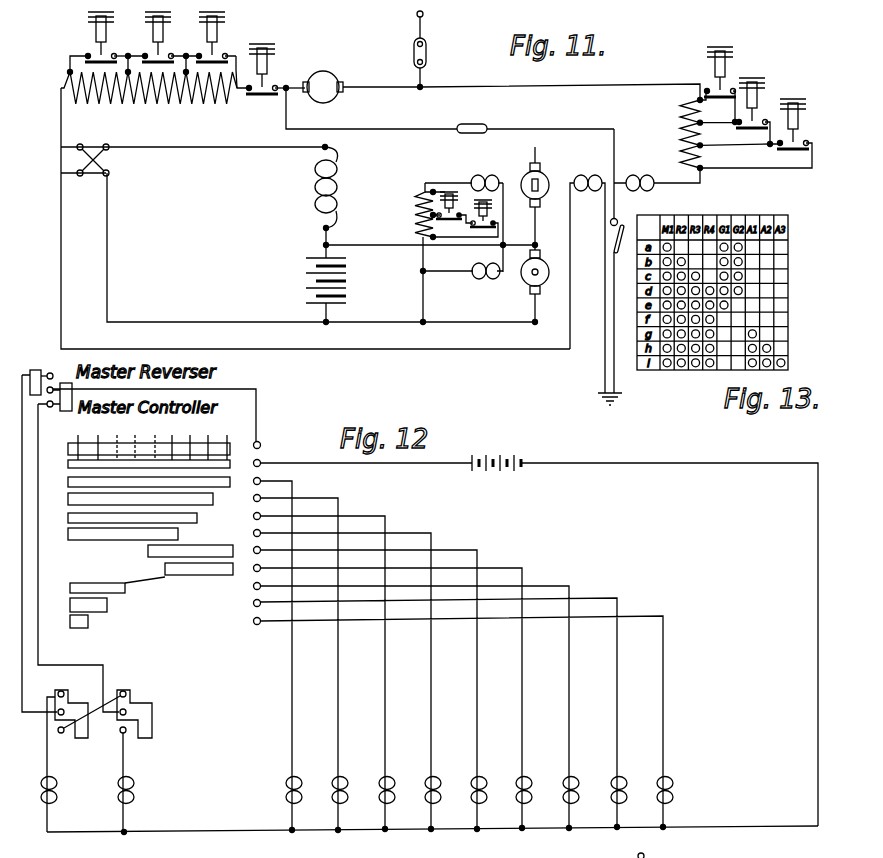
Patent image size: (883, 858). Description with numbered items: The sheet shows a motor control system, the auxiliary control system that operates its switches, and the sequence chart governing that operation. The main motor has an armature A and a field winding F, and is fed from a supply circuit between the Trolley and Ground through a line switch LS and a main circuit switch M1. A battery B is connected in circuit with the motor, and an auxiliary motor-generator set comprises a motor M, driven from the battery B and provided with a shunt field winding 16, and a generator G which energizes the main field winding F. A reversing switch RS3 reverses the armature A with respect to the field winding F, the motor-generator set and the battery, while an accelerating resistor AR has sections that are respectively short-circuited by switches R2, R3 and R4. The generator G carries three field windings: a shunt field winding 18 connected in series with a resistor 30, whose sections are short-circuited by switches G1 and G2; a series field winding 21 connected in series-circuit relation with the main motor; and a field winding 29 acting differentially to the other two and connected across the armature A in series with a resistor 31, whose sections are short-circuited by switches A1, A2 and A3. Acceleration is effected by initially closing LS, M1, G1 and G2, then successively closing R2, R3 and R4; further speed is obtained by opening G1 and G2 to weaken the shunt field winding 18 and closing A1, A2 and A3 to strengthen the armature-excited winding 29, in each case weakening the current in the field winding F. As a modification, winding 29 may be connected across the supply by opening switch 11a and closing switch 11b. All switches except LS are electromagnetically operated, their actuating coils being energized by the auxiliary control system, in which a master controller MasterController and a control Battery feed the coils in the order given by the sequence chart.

In FIG. 11, the resistor-short-circuiting switch R4 is at (106, 37).
In FIG. 12, the resistor-short-circuiting switch R4 is at (421, 803).
In FIG. 11, the resistor-short-circuiting switch R3 is at (157, 37).
In FIG. 12, the resistor-short-circuiting switch R3 is at (381, 798).
In FIG. 11, the resistor-short-circuiting switch R2 is at (213, 37).
In FIG. 12, the resistor-short-circuiting switch R2 is at (329, 804).
In FIG. 11, the main circuit switch M1 is at (275, 69).
In FIG. 12, the main circuit switch M1 is at (288, 798).
In FIG. 11, the armature A is at (323, 87).
In FIG. 11, the accelerating resistor AR is at (155, 94).
In FIG. 11, the trolley Trolley is at (448, 24).
In FIG. 12, the trolley Trolley is at (668, 851).
In FIG. 11, the line switch LS is at (432, 64).
In FIG. 11, the switch 11a is at (470, 123).
In FIG. 11, the switch 11b is at (623, 223).
In FIG. 11, the reversing switch RS3 is at (109, 160).
In FIG. 12, the reversing switch RS3 is at (126, 704).
In FIG. 11, the field winding F is at (335, 188).
In FIG. 11, the battery B is at (340, 280).
In FIG. 11, the resistor 30 is at (414, 216).
In FIG. 11, the switch G1 is at (454, 207).
In FIG. 12, the switch G1 is at (473, 798).
In FIG. 11, the switch G2 is at (489, 213).
In FIG. 12, the switch G2 is at (512, 803).
In FIG. 11, the shunt field winding 18 is at (474, 176).
In FIG. 11, the shunt field winding 16 is at (463, 283).
In FIG. 11, the generator G is at (540, 198).
In FIG. 11, the motor M is at (532, 287).
In FIG. 11, the series field winding 21 is at (590, 172).
In FIG. 11, the field winding 29 is at (645, 163).
In FIG. 11, the resistor 31 is at (680, 143).
In FIG. 11, the switch A1 is at (724, 68).
In FIG. 12, the switch A1 is at (556, 803).
In FIG. 11, the switch A2 is at (760, 90).
In FIG. 12, the switch A2 is at (604, 802).
In FIG. 11, the switch A3 is at (802, 115).
In FIG. 12, the switch A3 is at (651, 802).
In FIG. 11, the ground Ground is at (618, 408).
In FIG. 12, the master controller MasterController is at (164, 523).
In FIG. 12, the battery Battery is at (539, 635).